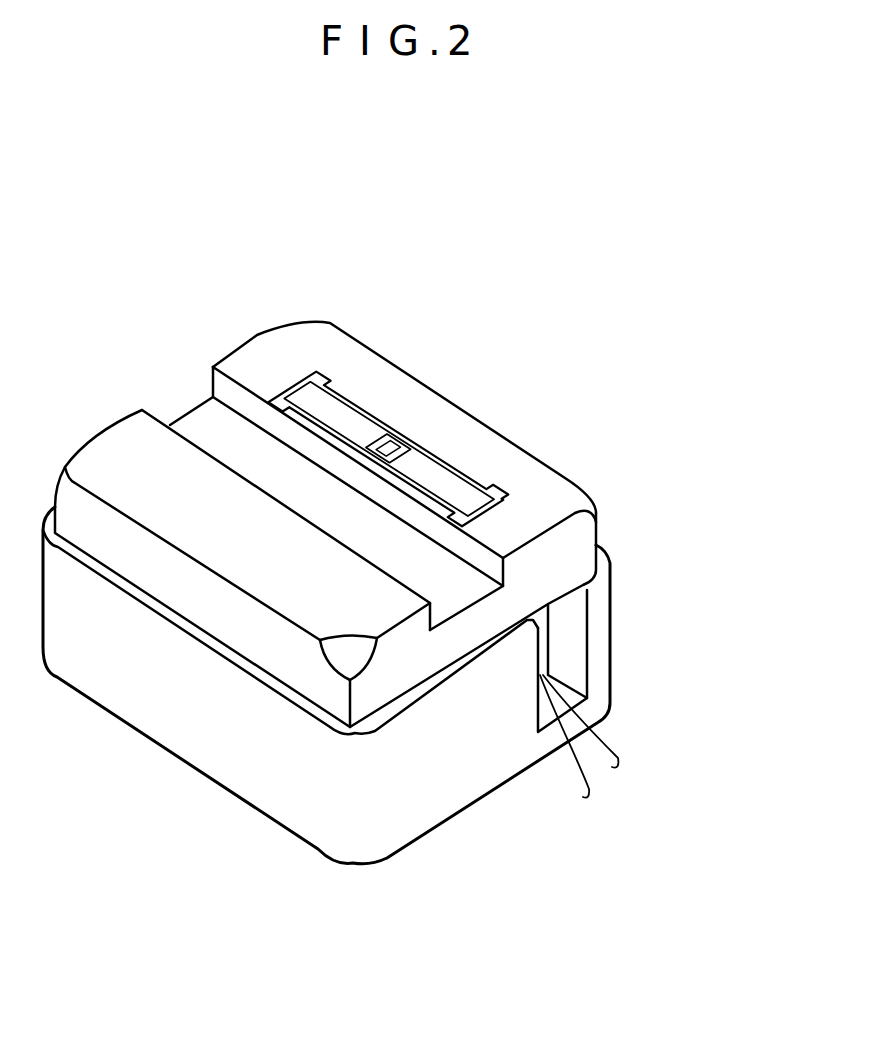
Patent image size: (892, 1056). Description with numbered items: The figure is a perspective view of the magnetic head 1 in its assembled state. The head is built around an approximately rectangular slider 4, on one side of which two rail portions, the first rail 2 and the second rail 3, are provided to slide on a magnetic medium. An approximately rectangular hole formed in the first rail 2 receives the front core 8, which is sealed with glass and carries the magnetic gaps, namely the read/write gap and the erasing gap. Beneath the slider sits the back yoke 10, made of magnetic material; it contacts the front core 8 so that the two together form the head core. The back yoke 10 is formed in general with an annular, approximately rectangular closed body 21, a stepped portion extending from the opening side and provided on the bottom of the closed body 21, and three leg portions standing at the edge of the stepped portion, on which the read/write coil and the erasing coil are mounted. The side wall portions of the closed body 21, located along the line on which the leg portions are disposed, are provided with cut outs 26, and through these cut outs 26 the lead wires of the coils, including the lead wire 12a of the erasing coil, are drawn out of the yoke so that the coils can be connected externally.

The magnetic head 1 is at (586, 280).
The first rail 2 is at (258, 360).
The second rail 3 is at (113, 453).
The slider 4 is at (553, 455).
The front core 8 is at (425, 473).
The back yoke 10 is at (615, 590).
The lead wire 12a is at (610, 742).
The closed body 21 is at (480, 757).
The cut out 26 is at (572, 630).